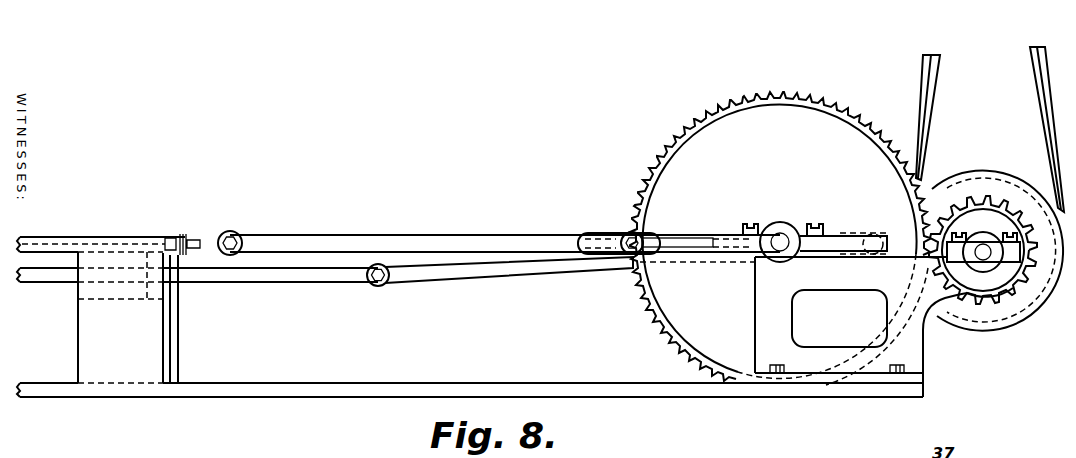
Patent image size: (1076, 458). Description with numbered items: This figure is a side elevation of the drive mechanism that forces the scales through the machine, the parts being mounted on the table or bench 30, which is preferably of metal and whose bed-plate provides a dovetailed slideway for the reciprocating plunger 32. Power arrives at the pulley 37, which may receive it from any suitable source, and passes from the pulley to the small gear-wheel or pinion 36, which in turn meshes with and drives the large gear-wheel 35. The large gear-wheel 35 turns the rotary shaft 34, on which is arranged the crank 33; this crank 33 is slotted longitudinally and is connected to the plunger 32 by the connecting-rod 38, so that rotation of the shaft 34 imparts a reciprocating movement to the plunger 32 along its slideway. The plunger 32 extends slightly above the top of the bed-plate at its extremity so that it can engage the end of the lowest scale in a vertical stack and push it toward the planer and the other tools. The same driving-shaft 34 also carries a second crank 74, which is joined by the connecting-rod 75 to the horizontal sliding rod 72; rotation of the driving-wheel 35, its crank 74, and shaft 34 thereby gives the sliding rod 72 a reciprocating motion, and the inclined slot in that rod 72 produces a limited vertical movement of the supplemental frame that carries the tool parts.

The table or bench 30 is at (515, 324).
The reciprocating plunger 32 is at (63, 238).
The crank 33 is at (678, 231).
The rotary shaft 34 is at (781, 236).
The large gear-wheel 35 is at (780, 238).
The small gear-wheel or pinion 36 is at (987, 198).
The pulley 37 is at (965, 181).
The connecting-rod 38 is at (373, 240).
The horizontal sliding rod 72 is at (224, 283).
The crank 74 is at (850, 228).
The connecting-rod 75 is at (502, 270).